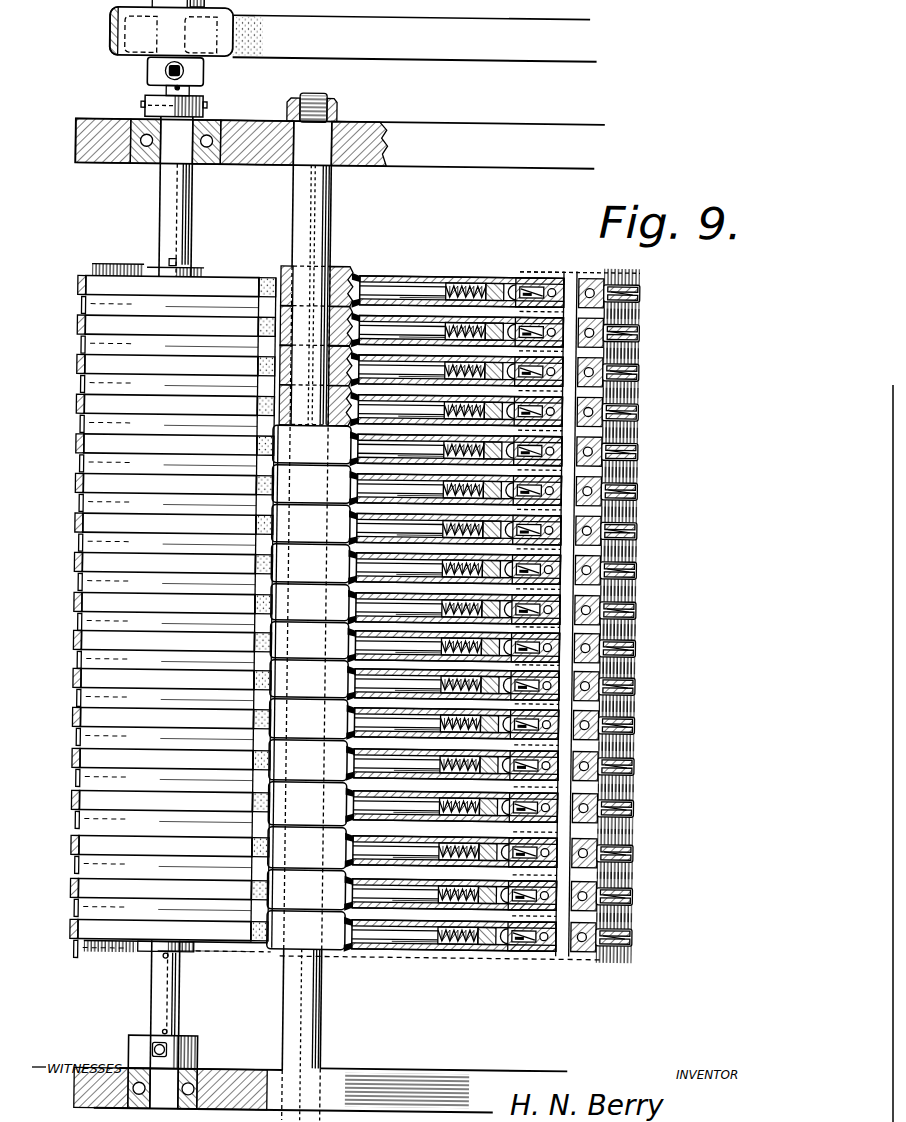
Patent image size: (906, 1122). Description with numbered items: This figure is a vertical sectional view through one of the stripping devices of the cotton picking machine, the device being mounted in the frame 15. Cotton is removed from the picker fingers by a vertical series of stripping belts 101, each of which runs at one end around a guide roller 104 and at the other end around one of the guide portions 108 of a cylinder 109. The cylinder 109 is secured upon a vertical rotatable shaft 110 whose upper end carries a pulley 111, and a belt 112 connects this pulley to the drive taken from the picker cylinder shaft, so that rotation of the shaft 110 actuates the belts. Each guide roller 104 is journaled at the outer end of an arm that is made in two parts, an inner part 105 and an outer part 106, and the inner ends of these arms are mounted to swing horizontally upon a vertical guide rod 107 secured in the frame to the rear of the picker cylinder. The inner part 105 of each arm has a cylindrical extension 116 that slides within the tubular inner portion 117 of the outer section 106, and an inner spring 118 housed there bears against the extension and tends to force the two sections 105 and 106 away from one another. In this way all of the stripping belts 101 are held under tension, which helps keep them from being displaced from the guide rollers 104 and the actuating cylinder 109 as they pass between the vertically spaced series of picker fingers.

The frame 15 is at (487, 168).
The stripping belts 101 is at (487, 643).
The guide rollers 104 is at (610, 950).
The inner arm part 105 is at (344, 941).
The outer arm part 106 is at (528, 950).
The vertical guide rod 107 is at (332, 219).
The guide portions 108 is at (116, 279).
The cylinder 109 is at (97, 388).
The vertical rotatable shaft 110 is at (192, 222).
The pulley 111 is at (107, 54).
The belt 112 is at (430, 50).
The cylindrical extensions 116 is at (398, 941).
The tubular inner portions 117 is at (427, 949).
The inner springs 118 is at (462, 950).